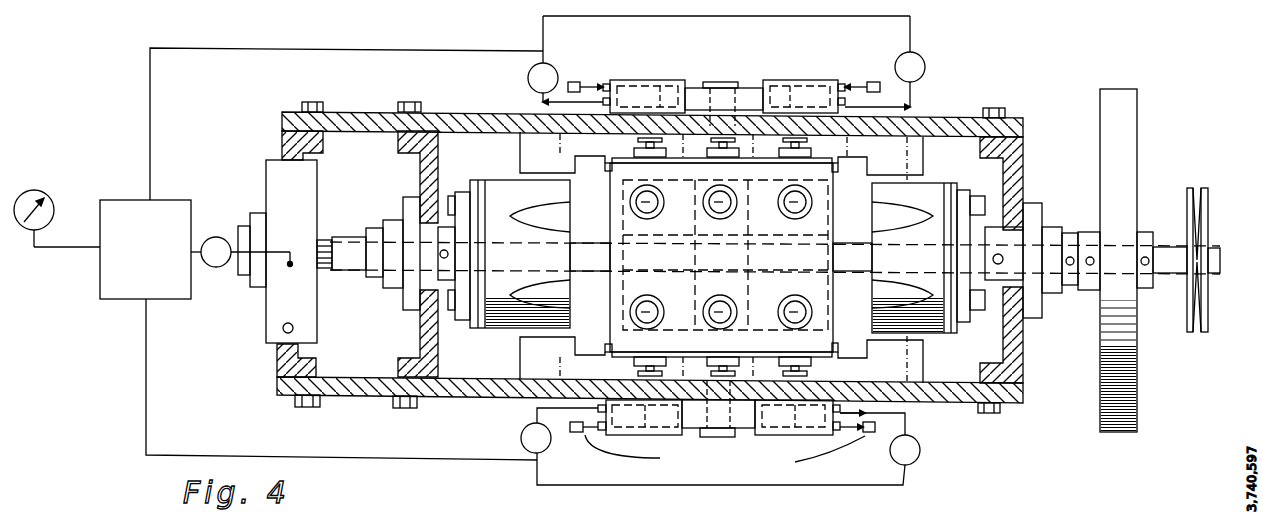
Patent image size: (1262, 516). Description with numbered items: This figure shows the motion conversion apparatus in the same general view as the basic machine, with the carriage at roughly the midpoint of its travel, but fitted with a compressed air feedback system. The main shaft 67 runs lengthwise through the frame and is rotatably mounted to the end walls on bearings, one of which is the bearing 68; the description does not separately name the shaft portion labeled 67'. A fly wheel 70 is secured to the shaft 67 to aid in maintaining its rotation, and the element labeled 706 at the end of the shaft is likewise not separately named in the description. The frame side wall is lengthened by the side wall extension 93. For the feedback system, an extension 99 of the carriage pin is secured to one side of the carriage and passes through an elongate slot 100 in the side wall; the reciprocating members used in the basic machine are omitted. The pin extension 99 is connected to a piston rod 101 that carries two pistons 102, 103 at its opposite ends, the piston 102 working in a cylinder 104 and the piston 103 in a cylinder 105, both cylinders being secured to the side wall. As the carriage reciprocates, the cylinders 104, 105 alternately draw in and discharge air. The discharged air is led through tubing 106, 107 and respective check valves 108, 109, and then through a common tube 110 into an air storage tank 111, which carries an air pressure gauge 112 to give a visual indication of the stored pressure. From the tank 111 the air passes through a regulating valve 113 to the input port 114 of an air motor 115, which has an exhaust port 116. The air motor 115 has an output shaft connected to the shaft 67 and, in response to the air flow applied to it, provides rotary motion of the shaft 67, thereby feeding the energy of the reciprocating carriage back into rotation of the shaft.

The shaft 67 is at (349, 239).
The shaft end 67' is at (333, 275).
The bearing 68 is at (394, 222).
The fly wheel 70 is at (1128, 122).
The side wall extension 93 is at (720, 448).
The pin extension 99 is at (724, 82).
The elongate slot 100 is at (752, 138).
The piston rod 101 is at (752, 88).
The piston 102 is at (665, 80).
The piston 103 is at (805, 80).
The cylinder 104 is at (620, 80).
The cylinder 105 is at (835, 80).
The tubing 106 is at (541, 102).
The tubing 107 is at (912, 101).
The check valve 108 is at (528, 78).
The check valve 109 is at (926, 66).
The common tube 110 is at (333, 49).
The air storage tank 111 is at (117, 208).
The air pressure gauge 112 is at (47, 198).
The regulating valve 113 is at (215, 238).
The input port 114 is at (289, 267).
The air motor 115 is at (305, 183).
The exhaust port 116 is at (283, 333).
The pulley 706 is at (1208, 198).